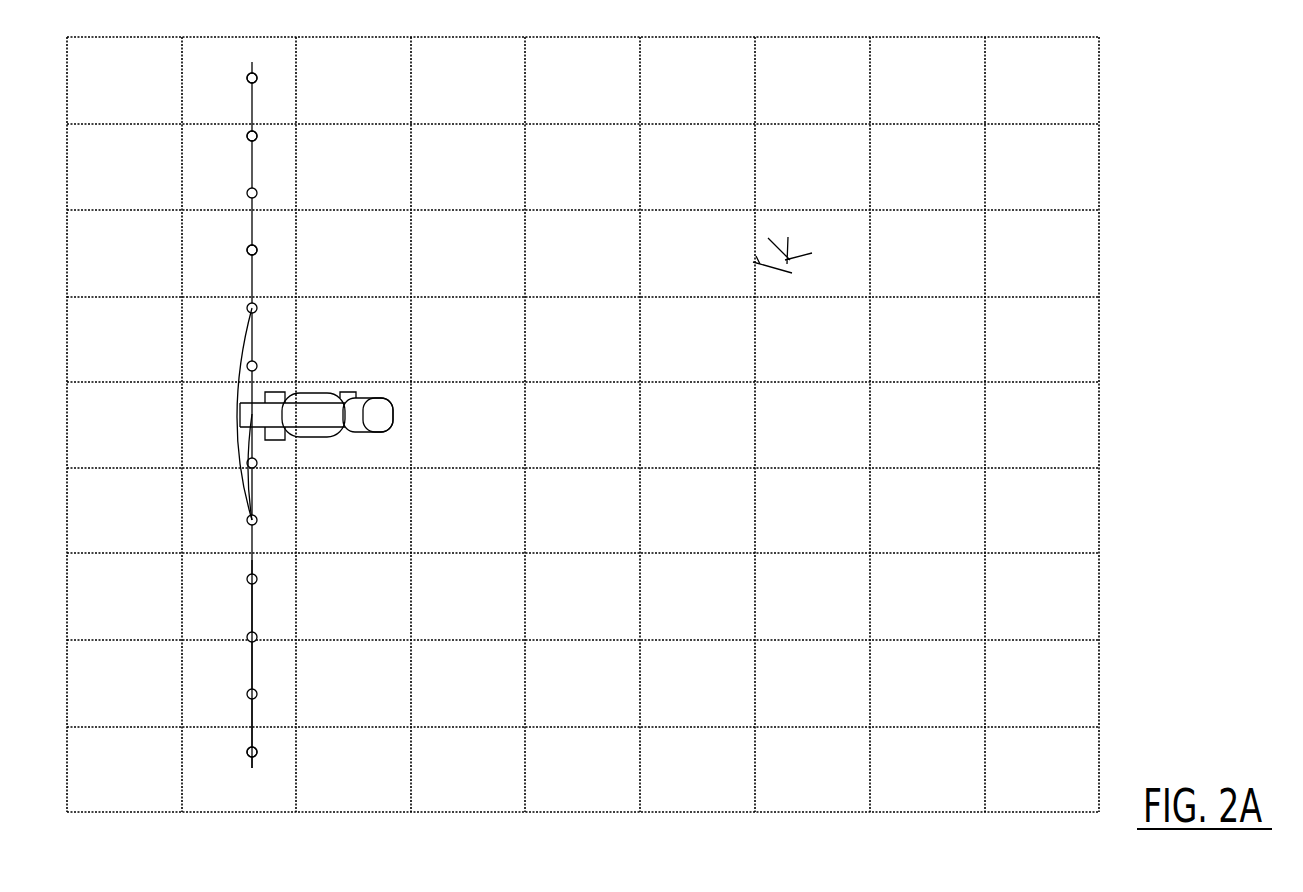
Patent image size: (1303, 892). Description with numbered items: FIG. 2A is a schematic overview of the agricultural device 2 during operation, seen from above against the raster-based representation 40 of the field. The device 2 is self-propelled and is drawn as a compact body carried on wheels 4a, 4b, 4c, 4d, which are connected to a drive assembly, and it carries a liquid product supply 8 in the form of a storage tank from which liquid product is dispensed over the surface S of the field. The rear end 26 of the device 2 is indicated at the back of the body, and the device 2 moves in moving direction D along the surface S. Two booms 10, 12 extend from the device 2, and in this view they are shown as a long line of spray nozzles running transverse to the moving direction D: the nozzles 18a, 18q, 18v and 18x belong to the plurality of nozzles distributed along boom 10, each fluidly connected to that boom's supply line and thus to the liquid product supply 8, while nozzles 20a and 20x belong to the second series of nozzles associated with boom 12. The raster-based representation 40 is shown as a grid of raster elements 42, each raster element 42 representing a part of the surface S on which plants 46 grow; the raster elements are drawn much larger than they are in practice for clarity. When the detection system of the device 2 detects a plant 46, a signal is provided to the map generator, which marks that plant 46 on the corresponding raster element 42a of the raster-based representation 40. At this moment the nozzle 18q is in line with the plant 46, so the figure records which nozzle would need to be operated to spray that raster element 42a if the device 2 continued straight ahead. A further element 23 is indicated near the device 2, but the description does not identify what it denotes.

The agricultural device 2 is at (456, 186).
The wheel 4a is at (370, 437).
The wheel 4b is at (345, 395).
The wheel 4c is at (271, 440).
The wheel 4d is at (272, 393).
The liquid product supply 8 is at (318, 421).
The boom 10 is at (226, 167).
The boom 12 is at (225, 702).
The nozzle 18a is at (226, 364).
The nozzle 18q is at (249, 249).
The nozzle 18v is at (250, 132).
The nozzle 18x is at (267, 83).
The nozzle 20a is at (231, 484).
The nozzle 20x is at (252, 753).
The insertion direction 23 is at (447, 408).
The rear end 26 is at (218, 424).
The raster-based representation 40 is at (1104, 496).
The raster element 42 is at (884, 366).
The raster element 42a is at (843, 224).
The plant 46 is at (753, 263).
The moving direction D is at (497, 445).
The surface S is at (1138, 243).